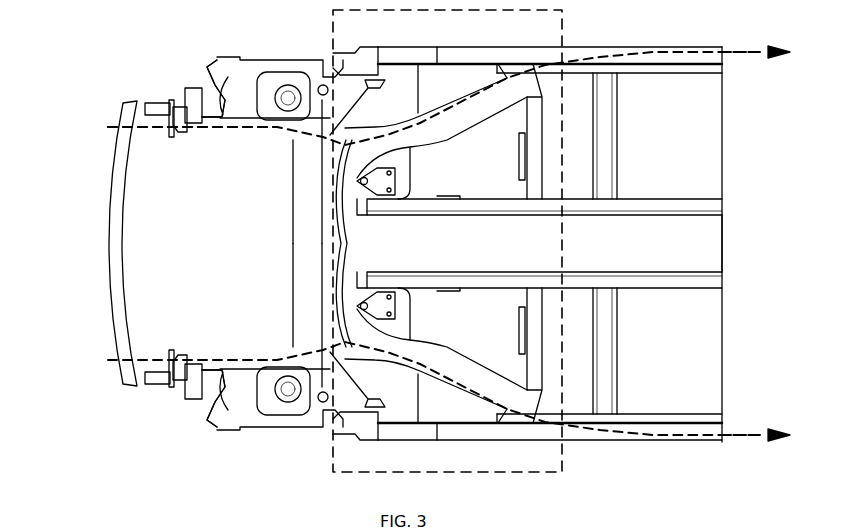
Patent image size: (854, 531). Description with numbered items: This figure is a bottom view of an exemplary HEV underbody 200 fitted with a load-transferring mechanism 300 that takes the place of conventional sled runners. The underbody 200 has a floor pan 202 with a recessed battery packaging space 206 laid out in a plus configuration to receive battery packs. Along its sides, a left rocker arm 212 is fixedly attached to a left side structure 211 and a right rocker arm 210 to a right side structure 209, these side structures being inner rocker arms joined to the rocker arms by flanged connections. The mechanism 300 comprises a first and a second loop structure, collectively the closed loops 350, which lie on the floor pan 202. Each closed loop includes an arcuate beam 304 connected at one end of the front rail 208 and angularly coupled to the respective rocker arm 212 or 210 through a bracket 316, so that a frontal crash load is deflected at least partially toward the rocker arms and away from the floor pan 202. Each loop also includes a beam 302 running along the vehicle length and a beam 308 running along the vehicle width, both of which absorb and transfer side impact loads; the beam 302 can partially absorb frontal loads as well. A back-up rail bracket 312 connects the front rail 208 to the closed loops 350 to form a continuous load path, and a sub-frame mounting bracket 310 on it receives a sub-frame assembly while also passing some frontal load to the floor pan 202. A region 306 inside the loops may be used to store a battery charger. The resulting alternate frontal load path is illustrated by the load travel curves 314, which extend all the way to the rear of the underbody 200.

The HEV underbody 200 is at (200, 66).
The floor pan 202 is at (722, 350).
The battery packaging space 206 is at (700, 255).
The front rail 208 is at (227, 128).
The right side structure 209 is at (627, 73).
The right rocker arm 210 is at (705, 47).
The left side structure 211 is at (627, 413).
The left rocker arm 212 is at (645, 440).
The mechanism 300 is at (328, 38).
The beam 302 is at (462, 215).
The arcuate beam 304 is at (450, 100).
The region 306 is at (470, 155).
The beam 308 is at (542, 170).
The sub-frame mounting bracket 310 is at (358, 180).
The back-up rail bracket 312 is at (350, 190).
The load travel curve 314 is at (107, 128).
The bracket 316 is at (530, 63).
The closed loops 350 is at (552, 140).